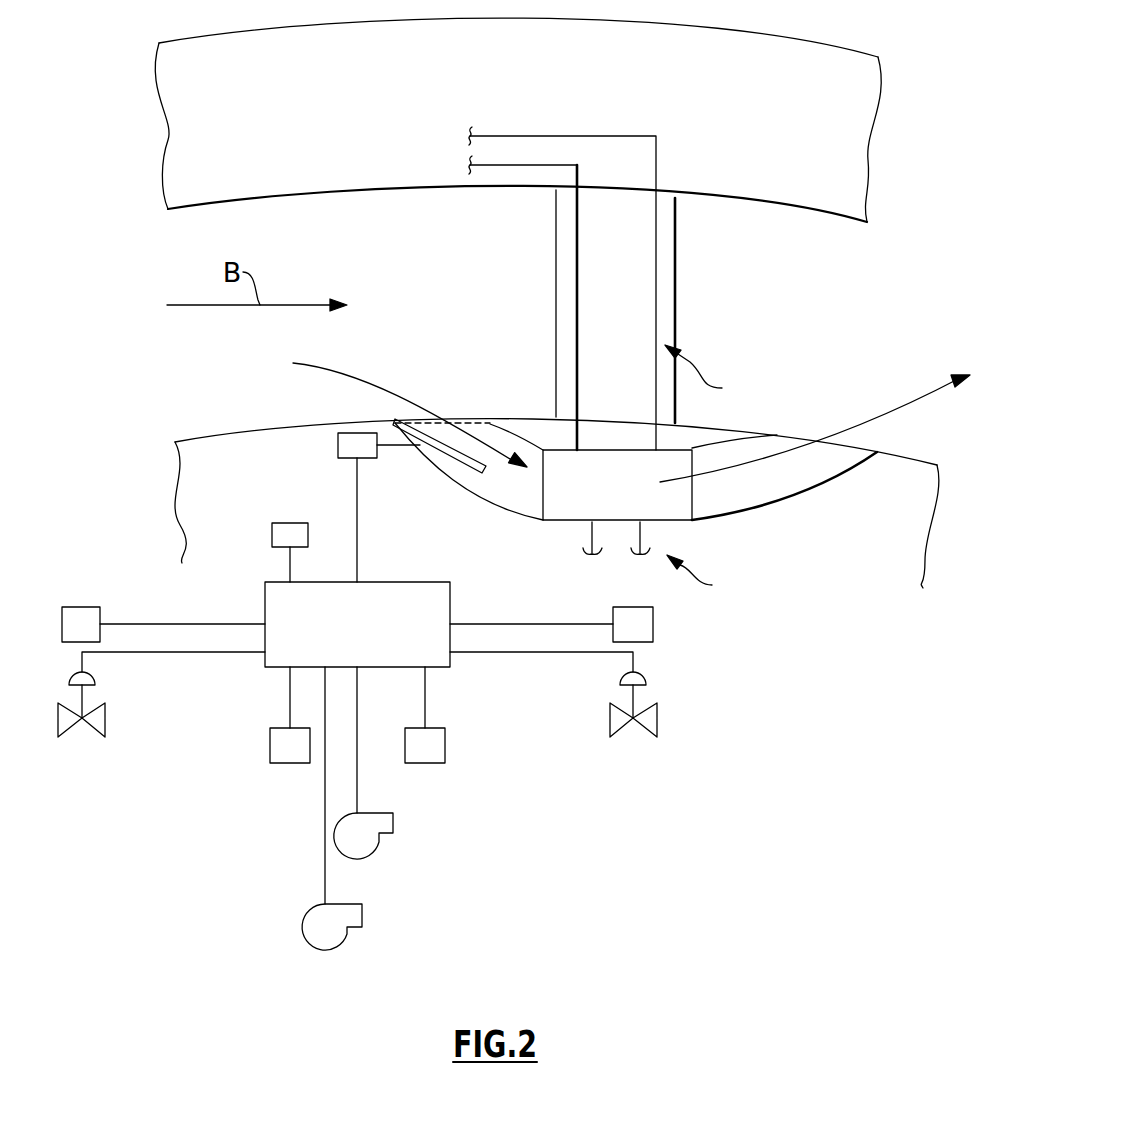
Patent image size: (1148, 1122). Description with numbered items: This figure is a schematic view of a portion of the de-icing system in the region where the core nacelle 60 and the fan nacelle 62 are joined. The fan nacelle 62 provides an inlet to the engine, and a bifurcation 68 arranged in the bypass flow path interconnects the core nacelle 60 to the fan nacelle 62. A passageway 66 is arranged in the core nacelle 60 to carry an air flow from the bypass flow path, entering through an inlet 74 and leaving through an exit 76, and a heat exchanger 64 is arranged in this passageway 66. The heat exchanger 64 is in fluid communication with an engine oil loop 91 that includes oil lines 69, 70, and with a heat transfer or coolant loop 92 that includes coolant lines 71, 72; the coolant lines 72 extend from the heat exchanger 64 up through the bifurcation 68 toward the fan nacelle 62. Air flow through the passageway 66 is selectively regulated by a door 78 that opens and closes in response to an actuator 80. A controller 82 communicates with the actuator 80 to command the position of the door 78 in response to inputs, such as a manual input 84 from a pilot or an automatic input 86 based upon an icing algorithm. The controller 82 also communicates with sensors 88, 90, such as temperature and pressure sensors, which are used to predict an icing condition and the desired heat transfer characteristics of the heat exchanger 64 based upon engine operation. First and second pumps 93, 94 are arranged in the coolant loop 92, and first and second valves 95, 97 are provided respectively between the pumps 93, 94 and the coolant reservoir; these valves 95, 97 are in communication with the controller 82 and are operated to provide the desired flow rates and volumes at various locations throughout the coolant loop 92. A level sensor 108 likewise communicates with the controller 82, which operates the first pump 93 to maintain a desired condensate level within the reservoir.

The core nacelle 60 is at (902, 458).
The fan nacelle 62 is at (822, 57).
The heat exchanger 64 is at (603, 498).
The passageway 66 is at (478, 497).
The bifurcation 68 is at (677, 300).
The oil line 69 is at (590, 524).
The oil line 70 is at (642, 544).
The coolant line 71 is at (595, 136).
The coolant line 72 is at (500, 166).
The inlet 74 is at (493, 427).
The exit 76 is at (745, 438).
The door 78 is at (452, 453).
The actuator 80 is at (338, 445).
The controller 82 is at (405, 582).
The manual input 84 is at (630, 607).
The automatic input 86 is at (85, 607).
The sensor 88 is at (270, 745).
The sensor 90 is at (445, 745).
The engine oil loop 91 is at (704, 578).
The coolant loop 92 is at (708, 375).
The first pump 93 is at (333, 933).
The second pump 94 is at (365, 842).
The first valve 95 is at (105, 720).
The second valve 97 is at (610, 720).
The level sensor 108 is at (272, 535).